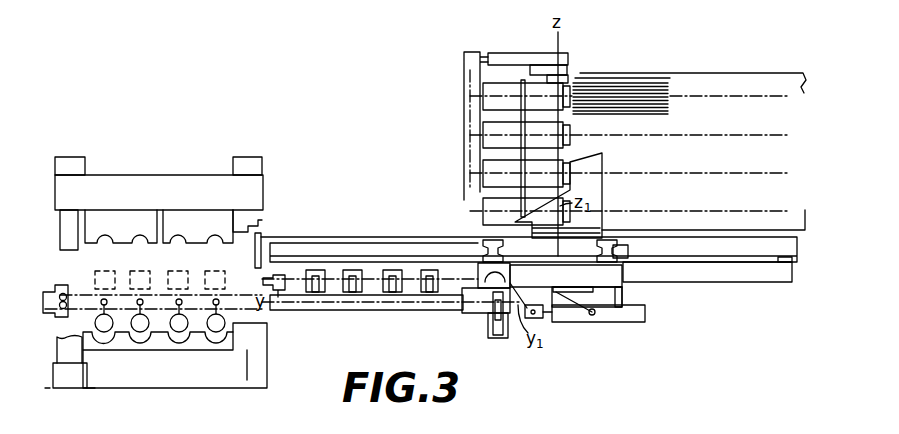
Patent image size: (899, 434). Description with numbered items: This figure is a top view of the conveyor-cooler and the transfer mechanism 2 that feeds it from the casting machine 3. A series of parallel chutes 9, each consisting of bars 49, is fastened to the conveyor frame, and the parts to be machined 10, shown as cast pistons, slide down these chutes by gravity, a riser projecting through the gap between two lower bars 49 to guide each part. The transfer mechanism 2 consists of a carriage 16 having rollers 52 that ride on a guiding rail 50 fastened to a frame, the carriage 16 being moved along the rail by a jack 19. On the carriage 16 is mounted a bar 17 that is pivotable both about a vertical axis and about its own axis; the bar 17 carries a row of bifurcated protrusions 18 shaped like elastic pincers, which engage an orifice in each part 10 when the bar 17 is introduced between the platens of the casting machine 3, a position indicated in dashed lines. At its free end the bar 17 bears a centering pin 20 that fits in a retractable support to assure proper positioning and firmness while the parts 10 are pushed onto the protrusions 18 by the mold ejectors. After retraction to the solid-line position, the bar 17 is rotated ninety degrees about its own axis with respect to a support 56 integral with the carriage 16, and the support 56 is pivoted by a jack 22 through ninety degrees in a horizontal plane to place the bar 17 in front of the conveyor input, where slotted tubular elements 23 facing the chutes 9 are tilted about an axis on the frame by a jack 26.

The transfer mechanism 2 is at (410, 275).
The casting machine 3 is at (128, 383).
The chutes 9 is at (612, 73).
The parts to be machined 10 is at (213, 290).
The carriage 16 is at (565, 295).
The bar 17 is at (372, 310).
The bifurcated protrusions 18 is at (140, 307).
The jack 19 is at (715, 275).
The centering pin 20 is at (58, 317).
The jack 22 is at (626, 322).
The slotted tubular elements 23 is at (485, 95).
The jack 26 is at (500, 153).
The bars 49 is at (655, 97).
The guiding rail 50 is at (452, 246).
The rollers 52 is at (604, 240).
The support 56 is at (470, 313).